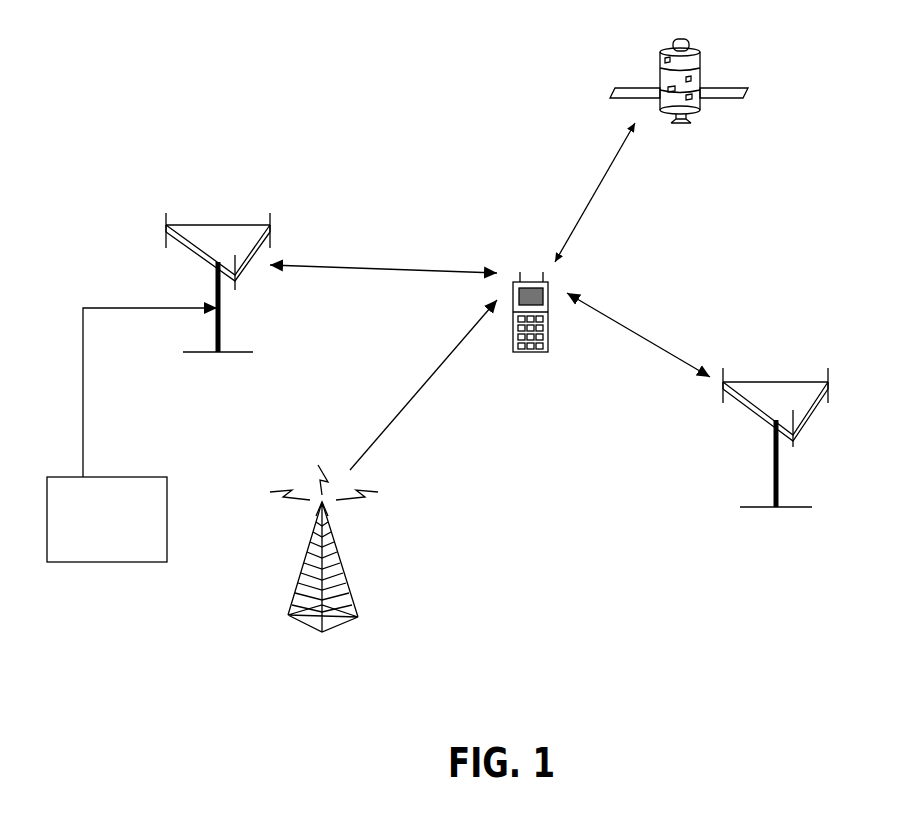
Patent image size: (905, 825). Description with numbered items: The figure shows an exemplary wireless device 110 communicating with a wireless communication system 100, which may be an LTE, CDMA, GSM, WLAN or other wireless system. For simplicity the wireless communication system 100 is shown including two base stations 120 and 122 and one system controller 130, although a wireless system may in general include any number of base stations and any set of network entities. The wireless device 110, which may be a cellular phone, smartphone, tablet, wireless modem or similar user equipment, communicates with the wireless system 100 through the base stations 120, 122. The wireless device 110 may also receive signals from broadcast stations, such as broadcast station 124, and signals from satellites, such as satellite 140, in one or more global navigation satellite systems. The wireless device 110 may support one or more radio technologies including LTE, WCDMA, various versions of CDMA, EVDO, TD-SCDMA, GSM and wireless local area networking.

The wireless communication system 100 is at (386, 88).
The wireless device 110 is at (548, 340).
The base station 120 is at (210, 224).
The base station 122 is at (768, 384).
The broadcast station 124 is at (345, 581).
The system controller 130 is at (122, 477).
The satellite 140 is at (718, 92).